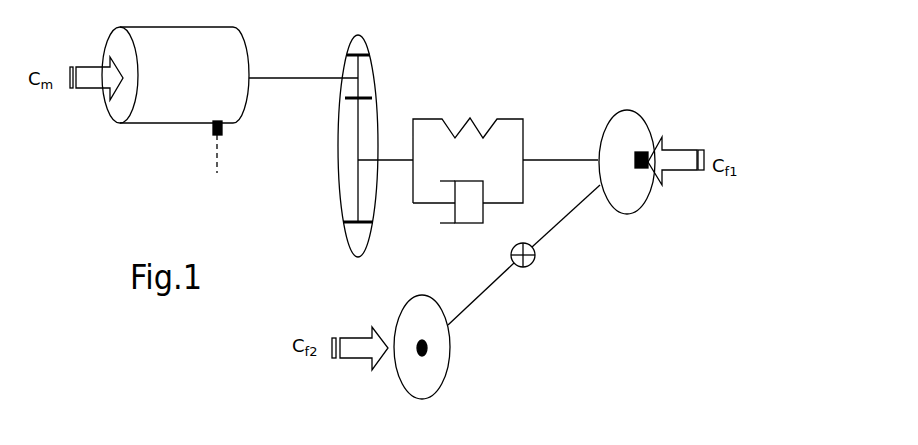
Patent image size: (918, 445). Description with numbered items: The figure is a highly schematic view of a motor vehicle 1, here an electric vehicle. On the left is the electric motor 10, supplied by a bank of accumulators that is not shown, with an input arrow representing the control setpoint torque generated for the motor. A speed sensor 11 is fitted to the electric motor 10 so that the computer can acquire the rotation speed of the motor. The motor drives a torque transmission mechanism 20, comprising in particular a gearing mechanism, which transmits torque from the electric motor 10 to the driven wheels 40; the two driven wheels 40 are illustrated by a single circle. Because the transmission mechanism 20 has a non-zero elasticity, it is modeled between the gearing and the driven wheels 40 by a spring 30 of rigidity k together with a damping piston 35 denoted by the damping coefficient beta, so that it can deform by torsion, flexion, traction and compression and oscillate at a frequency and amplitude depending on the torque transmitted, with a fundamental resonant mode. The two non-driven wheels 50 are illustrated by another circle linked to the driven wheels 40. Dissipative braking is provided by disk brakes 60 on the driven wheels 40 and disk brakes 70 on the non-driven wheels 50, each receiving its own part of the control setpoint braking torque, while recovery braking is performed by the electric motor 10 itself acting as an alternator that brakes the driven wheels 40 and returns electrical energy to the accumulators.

The motor vehicle 1 is at (692, 77).
The electric motor 10 is at (177, 123).
The speed sensor 11 is at (222, 128).
The torque transmission mechanism 20 is at (345, 228).
The spring 30 is at (507, 118).
The damping piston 35 is at (470, 225).
The driven wheels 40 is at (630, 214).
The non-driven wheels 50 is at (442, 384).
The disk brakes of the driven wheels 60 is at (641, 168).
The disk brakes of the non-driven wheels 70 is at (427, 348).